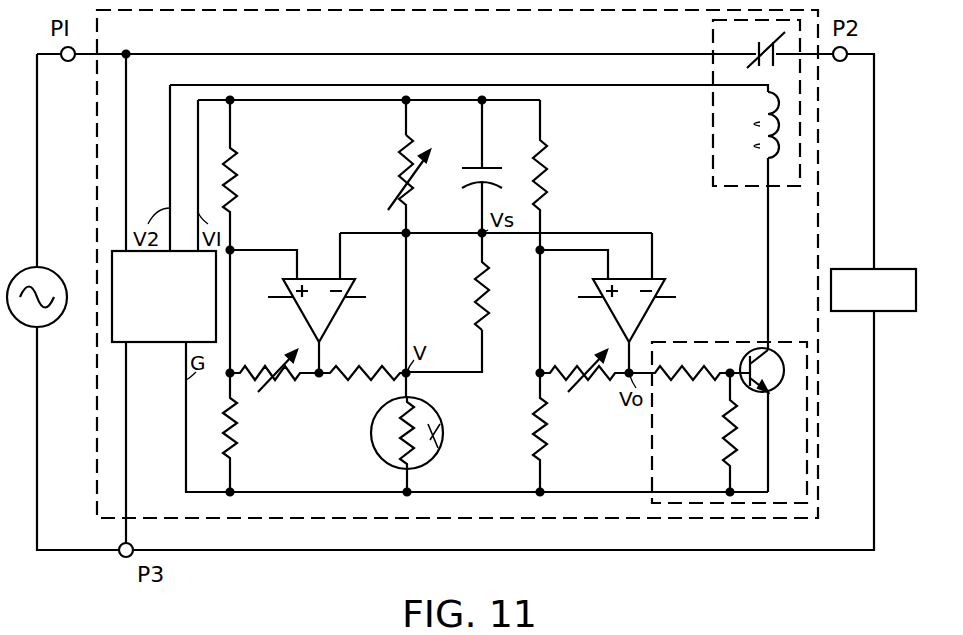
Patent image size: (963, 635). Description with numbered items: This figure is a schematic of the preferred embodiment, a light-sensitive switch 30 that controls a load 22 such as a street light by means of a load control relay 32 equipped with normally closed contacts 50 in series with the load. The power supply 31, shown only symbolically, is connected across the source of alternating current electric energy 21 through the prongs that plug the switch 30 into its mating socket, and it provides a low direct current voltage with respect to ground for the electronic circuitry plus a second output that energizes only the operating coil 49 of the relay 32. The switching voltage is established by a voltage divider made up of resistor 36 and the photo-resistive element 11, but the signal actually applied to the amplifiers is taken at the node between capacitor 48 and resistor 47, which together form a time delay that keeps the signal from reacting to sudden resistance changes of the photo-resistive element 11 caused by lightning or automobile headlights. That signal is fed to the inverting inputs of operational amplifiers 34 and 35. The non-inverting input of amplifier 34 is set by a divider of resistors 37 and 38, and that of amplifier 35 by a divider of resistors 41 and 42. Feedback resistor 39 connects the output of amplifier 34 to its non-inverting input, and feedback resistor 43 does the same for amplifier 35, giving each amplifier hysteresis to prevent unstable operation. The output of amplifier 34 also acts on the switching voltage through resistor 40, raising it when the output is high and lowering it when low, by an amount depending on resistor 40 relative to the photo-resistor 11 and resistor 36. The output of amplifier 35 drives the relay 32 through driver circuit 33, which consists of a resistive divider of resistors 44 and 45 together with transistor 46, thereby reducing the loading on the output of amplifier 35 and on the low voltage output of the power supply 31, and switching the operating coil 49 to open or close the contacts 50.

The photo-resistive element 11 is at (443, 428).
The source of alternating current electric energy 21 is at (60, 272).
The load 22 is at (880, 269).
The switch 30 is at (818, 462).
The power supply 31 is at (148, 344).
The load control relay 32 is at (742, 187).
The driver circuit 33 is at (800, 342).
The operational amplifier 34 is at (346, 279).
The operational amplifier 35 is at (660, 279).
The resistor 36 is at (399, 172).
The resistor 37 is at (237, 172).
The resistor 38 is at (238, 438).
The resistor 39 is at (262, 364).
The resistor 40 is at (368, 366).
The resistor 41 is at (548, 170).
The resistor 42 is at (547, 432).
The resistor 43 is at (576, 355).
The resistor 44 is at (667, 380).
The resistor 45 is at (723, 460).
The transistor 46 is at (780, 388).
The resistor 47 is at (475, 282).
The capacitor 48 is at (484, 168).
The operating coil 49 is at (747, 125).
The normally closed contacts 50 is at (758, 42).